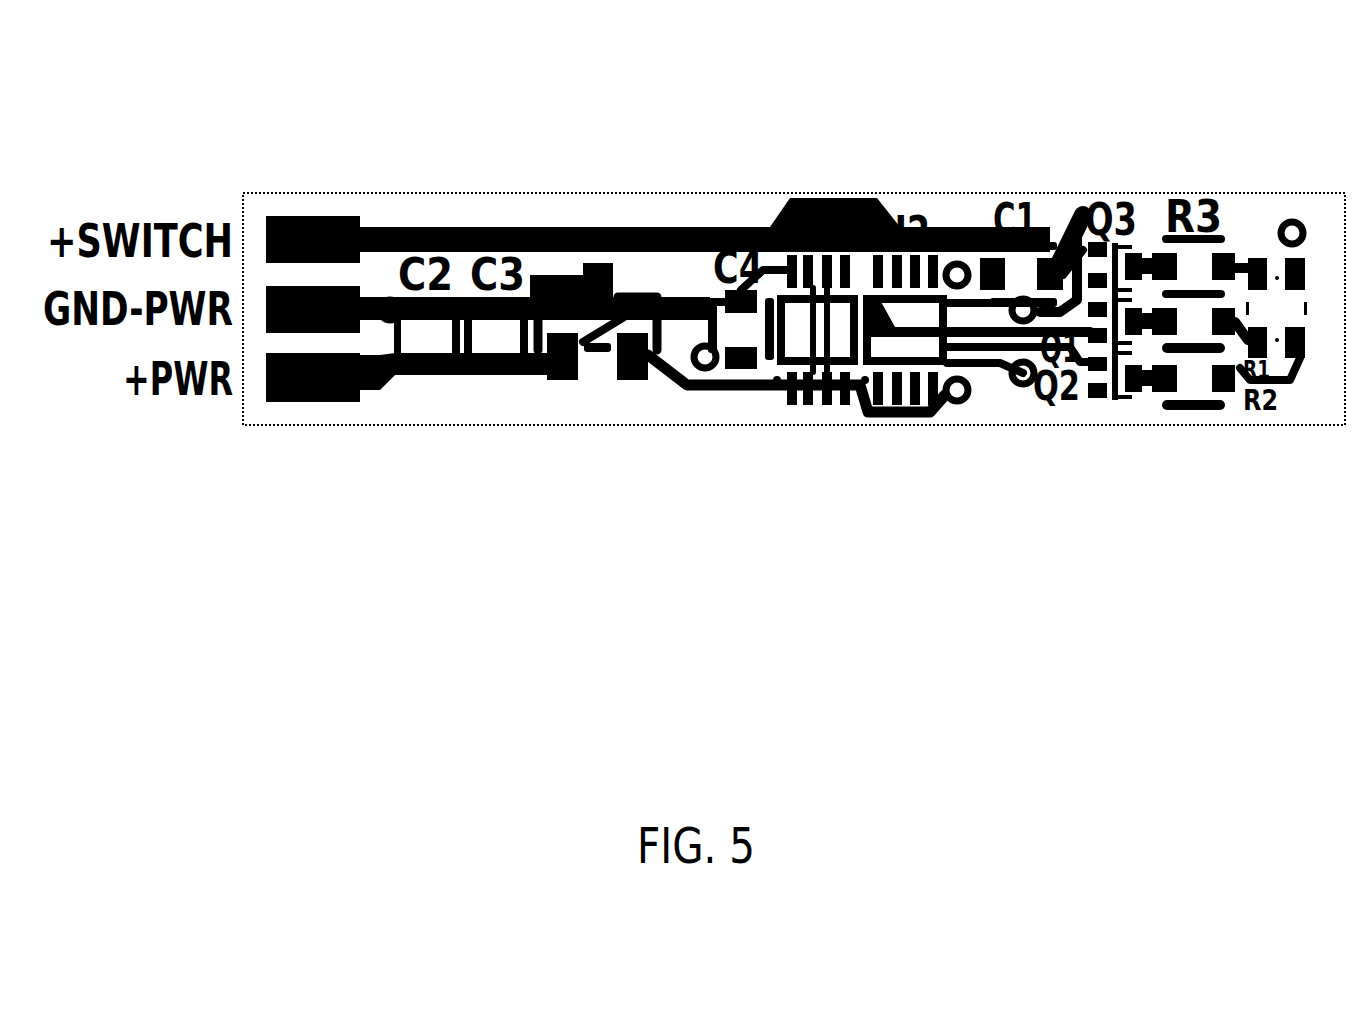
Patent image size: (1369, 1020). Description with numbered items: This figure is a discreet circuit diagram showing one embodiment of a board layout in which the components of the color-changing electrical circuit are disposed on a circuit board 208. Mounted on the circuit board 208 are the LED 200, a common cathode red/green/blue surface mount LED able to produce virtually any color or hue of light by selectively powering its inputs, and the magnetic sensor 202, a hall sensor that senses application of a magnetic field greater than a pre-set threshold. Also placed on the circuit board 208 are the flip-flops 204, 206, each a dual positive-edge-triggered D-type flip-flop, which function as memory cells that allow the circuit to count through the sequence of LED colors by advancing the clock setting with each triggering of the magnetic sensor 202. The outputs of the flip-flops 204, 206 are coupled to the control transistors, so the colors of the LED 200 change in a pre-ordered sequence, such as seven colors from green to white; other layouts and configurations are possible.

The LED 200 is at (1290, 220).
The magnetic sensor 202 is at (582, 270).
The flip-flop 204 is at (822, 315).
The flip-flop 206 is at (920, 317).
The circuit board 208 is at (683, 190).